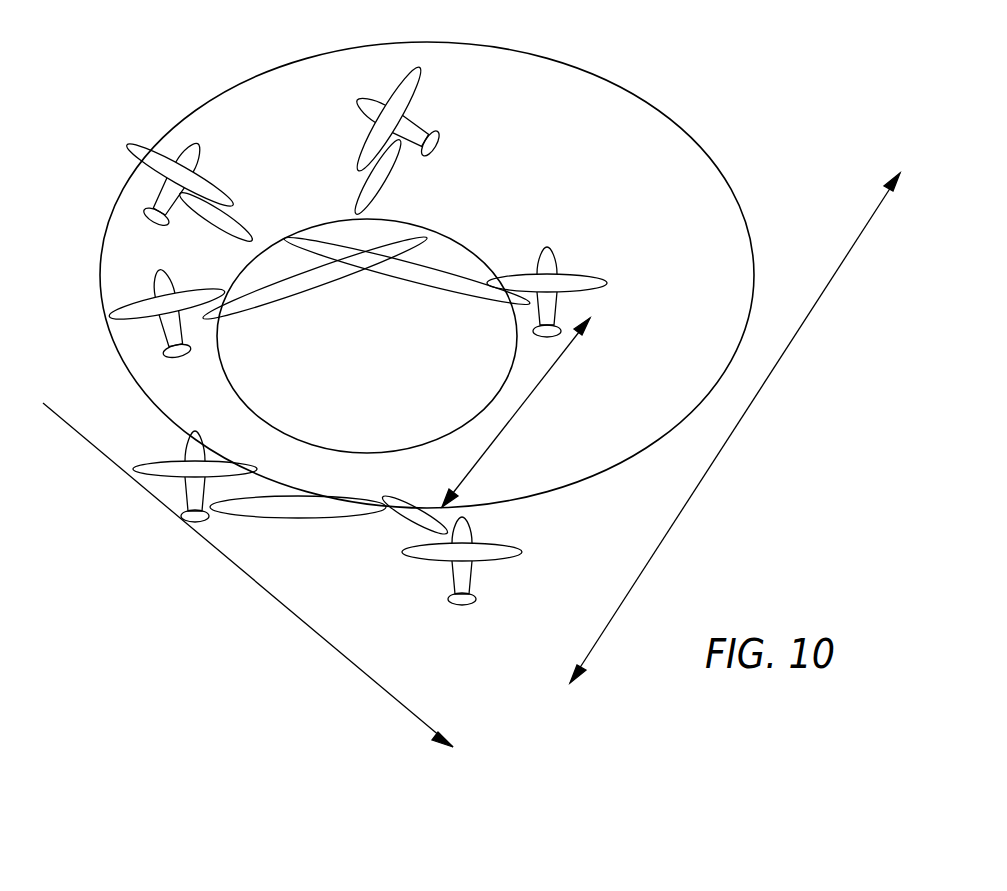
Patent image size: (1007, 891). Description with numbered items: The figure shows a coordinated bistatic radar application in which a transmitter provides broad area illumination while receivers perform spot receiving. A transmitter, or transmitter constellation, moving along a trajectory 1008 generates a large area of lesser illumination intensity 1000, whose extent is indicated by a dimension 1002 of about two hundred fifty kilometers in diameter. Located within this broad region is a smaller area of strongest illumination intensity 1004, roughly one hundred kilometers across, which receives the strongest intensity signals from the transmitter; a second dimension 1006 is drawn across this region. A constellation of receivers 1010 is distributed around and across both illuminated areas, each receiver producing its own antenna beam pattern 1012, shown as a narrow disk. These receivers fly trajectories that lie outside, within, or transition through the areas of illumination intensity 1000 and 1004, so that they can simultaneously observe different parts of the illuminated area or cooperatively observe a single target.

The area of lesser illumination intensity 1000 is at (583, 70).
The diameter of the area of lesser illumination intensity 1002 is at (834, 282).
The area of strongest illumination intensity 1004 is at (443, 235).
The second axis 1006 is at (527, 398).
The transmitter trajectory 1008 is at (213, 550).
The constellation of receivers 1010 is at (140, 150).
The antenna beam patterns 1012 is at (240, 225).